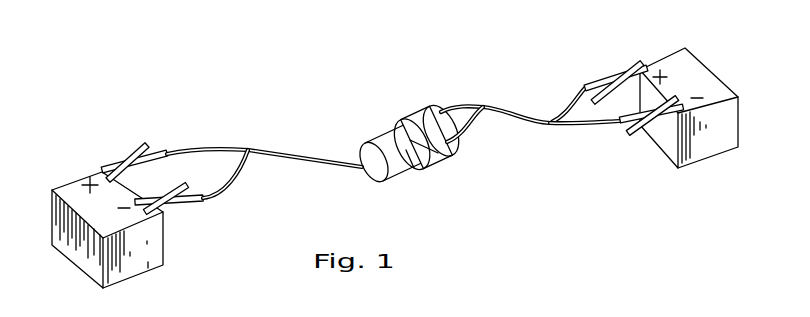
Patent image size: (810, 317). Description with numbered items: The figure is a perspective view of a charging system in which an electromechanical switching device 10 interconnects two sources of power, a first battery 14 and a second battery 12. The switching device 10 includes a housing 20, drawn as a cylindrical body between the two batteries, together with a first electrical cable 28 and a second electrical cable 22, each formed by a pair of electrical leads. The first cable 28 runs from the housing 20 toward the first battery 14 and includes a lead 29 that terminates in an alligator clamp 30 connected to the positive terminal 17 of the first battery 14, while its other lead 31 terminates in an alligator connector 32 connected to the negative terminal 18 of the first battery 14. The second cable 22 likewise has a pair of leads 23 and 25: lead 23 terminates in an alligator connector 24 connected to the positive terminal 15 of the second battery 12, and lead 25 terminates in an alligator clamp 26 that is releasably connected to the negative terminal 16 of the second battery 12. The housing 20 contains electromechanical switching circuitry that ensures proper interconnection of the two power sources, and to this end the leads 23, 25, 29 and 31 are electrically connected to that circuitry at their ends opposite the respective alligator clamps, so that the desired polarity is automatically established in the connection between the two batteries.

The electromechanical switching device 10 is at (368, 82).
The second battery 12 is at (152, 253).
The first battery 14 is at (692, 148).
The positive terminal 15 is at (100, 172).
The negative terminal 16 is at (138, 213).
The positive terminal 17 is at (642, 65).
The negative terminal 18 is at (684, 105).
The housing 20 is at (398, 160).
The second electrical cable 22 is at (262, 147).
The lead 23 is at (203, 145).
The alligator connector 24 is at (125, 155).
The lead 25 is at (222, 193).
The alligator clamp 26 is at (178, 206).
The first electrical cable 28 is at (508, 103).
The lead 29 is at (563, 95).
The alligator clamp 30 is at (608, 80).
The lead 31 is at (590, 127).
The alligator connector 32 is at (652, 143).